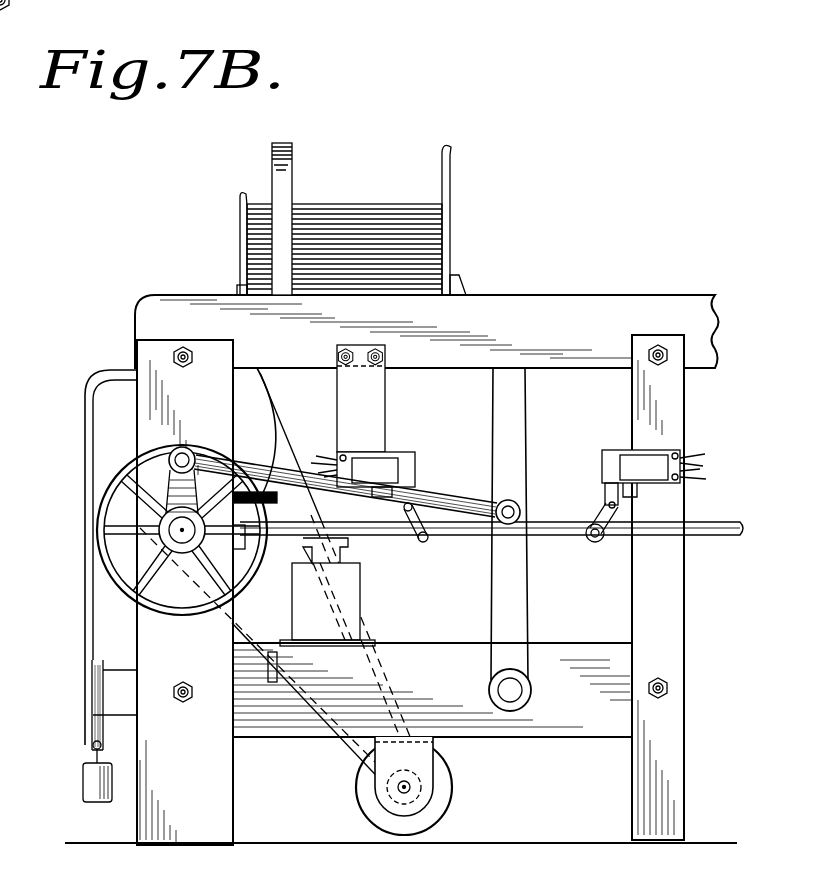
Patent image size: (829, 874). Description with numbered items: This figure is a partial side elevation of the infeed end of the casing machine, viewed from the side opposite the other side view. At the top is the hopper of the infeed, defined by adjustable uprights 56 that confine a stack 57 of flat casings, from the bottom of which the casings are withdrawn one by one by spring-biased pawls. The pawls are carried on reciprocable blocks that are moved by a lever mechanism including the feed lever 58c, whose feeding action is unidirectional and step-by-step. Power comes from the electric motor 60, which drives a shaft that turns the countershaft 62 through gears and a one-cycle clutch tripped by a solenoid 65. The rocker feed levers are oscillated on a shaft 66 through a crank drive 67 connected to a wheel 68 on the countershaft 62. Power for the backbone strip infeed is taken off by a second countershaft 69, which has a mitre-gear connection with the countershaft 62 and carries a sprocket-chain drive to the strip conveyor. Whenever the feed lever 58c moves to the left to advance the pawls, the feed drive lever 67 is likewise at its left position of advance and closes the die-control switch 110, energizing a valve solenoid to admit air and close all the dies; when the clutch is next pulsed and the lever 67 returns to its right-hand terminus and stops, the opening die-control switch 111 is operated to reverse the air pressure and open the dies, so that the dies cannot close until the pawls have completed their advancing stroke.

The adjustable uprights 56 is at (285, 197).
The stack 57 is at (370, 198).
The lever 58c is at (512, 427).
The electric motor 60 is at (448, 797).
The countershaft 62 is at (181, 535).
The solenoid 65 is at (352, 580).
The shaft 66 is at (500, 686).
The crank drive 67 is at (505, 577).
The wheel 68 is at (85, 505).
The countershaft 69 is at (712, 520).
The switch 110 is at (646, 462).
The switch 111 is at (370, 468).